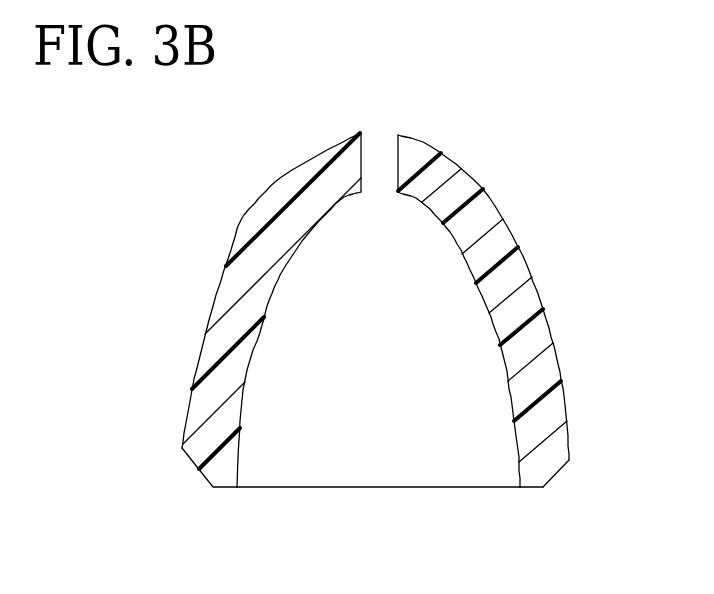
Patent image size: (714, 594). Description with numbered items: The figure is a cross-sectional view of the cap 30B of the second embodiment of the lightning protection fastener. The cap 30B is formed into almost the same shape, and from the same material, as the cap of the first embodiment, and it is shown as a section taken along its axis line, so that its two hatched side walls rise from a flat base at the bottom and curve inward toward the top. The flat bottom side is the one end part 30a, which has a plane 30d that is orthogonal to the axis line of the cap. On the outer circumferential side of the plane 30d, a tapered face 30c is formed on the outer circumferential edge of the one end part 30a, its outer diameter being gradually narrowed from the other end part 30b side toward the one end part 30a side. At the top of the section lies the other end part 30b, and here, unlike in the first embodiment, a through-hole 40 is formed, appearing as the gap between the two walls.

The cap 30B is at (243, 266).
The through-hole 40 is at (383, 155).
The other end part 30b is at (421, 142).
The one end part 30a is at (230, 487).
The tapered face 30c is at (563, 465).
The plane 30d is at (530, 489).